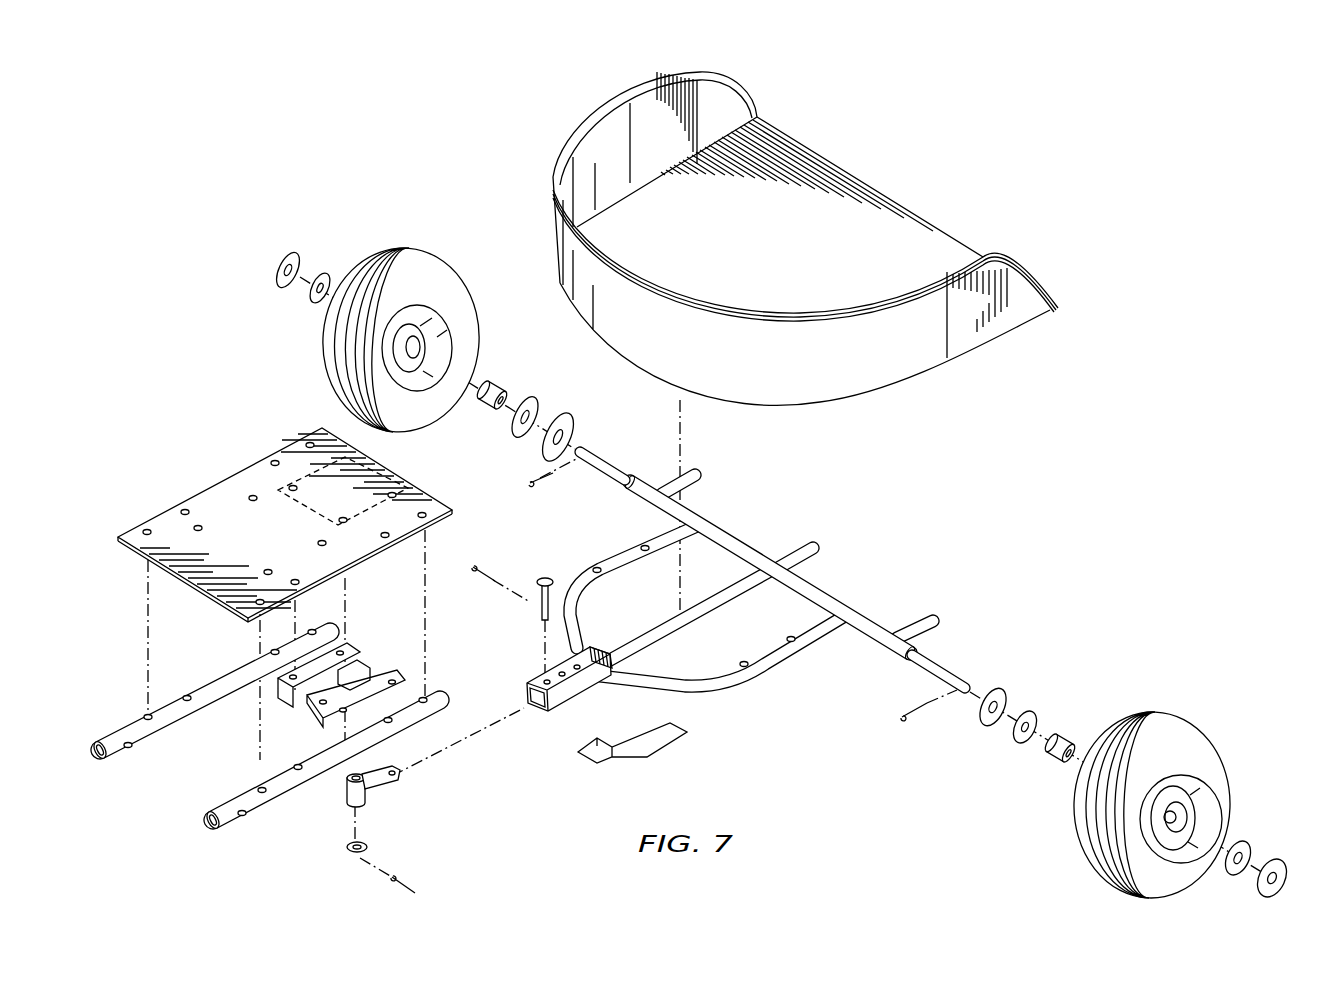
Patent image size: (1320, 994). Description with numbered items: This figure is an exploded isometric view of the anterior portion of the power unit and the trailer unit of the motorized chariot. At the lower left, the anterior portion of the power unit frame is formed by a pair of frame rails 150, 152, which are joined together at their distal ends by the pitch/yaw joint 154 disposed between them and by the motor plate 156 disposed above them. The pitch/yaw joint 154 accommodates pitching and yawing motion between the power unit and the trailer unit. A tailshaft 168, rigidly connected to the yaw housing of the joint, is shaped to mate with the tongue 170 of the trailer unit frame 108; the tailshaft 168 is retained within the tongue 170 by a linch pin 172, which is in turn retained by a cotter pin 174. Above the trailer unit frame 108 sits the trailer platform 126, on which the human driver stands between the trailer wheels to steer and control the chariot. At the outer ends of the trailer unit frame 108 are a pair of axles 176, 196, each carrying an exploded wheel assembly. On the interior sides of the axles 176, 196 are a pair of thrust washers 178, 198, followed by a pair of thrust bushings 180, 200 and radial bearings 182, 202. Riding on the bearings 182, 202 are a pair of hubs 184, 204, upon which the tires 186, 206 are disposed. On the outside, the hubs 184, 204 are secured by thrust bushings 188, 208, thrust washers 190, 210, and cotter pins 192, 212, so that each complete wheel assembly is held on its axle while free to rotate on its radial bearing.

The trailer unit frame 108 is at (832, 594).
The trailer platform 126 is at (915, 225).
The frame rail 150 is at (232, 796).
The frame rail 152 is at (205, 678).
The pitch/yaw joint 154 is at (378, 676).
The motor plate 156 is at (212, 494).
The tailshaft 168 is at (382, 789).
The tongue 170 is at (580, 690).
The linch pin 172 is at (540, 622).
The cotter pin 174 is at (473, 575).
The axle 176 is at (940, 660).
The thrust washer 178 is at (990, 688).
The thrust bushing 180 is at (1027, 710).
The radial bearing 182 is at (1066, 737).
The hub 184 is at (1205, 792).
The tire 186 is at (1176, 713).
The thrust bushing 188 is at (1241, 840).
The thrust washer 190 is at (1279, 858).
The cotter pin 192 is at (912, 726).
The axle 196 is at (605, 453).
The thrust washer 198 is at (561, 412).
The thrust bushing 200 is at (520, 440).
The radial bearing 202 is at (494, 384).
The hub 204 is at (450, 323).
The tire 206 is at (422, 250).
The thrust bushing 208 is at (324, 272).
The thrust washer 210 is at (288, 250).
The cotter pin 212 is at (540, 488).